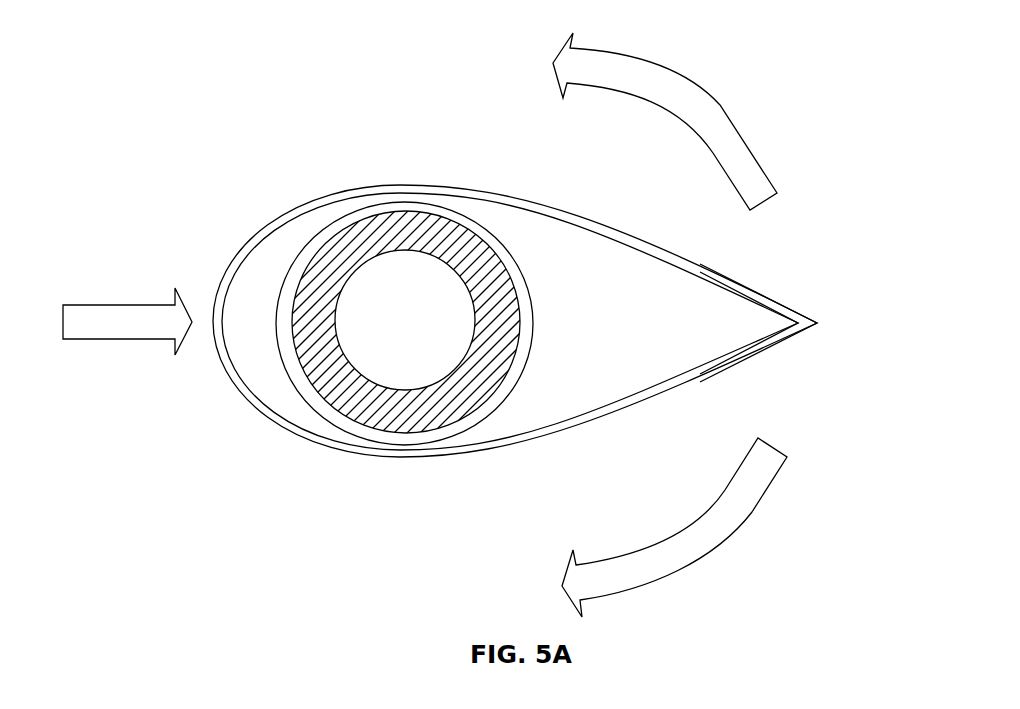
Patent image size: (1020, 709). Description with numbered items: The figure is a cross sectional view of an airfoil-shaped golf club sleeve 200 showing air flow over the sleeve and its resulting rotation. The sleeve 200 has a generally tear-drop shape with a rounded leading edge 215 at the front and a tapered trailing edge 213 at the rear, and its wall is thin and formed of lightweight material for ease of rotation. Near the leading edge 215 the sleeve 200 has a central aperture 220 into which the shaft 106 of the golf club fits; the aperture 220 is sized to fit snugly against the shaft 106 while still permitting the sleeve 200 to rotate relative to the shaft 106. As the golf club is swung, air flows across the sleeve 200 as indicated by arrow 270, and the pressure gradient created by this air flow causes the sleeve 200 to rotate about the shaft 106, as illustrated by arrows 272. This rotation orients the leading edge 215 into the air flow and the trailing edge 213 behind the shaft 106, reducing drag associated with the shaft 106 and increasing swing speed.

The golf club sleeve 200 is at (153, 42).
The shaft 106 is at (445, 410).
The trailing edge 213 is at (822, 323).
The leading edge 215 is at (217, 321).
The central aperture 220 is at (460, 213).
The arrow indicating air flow 270 is at (113, 327).
The arrows indicating sleeve movement 272 is at (740, 148).